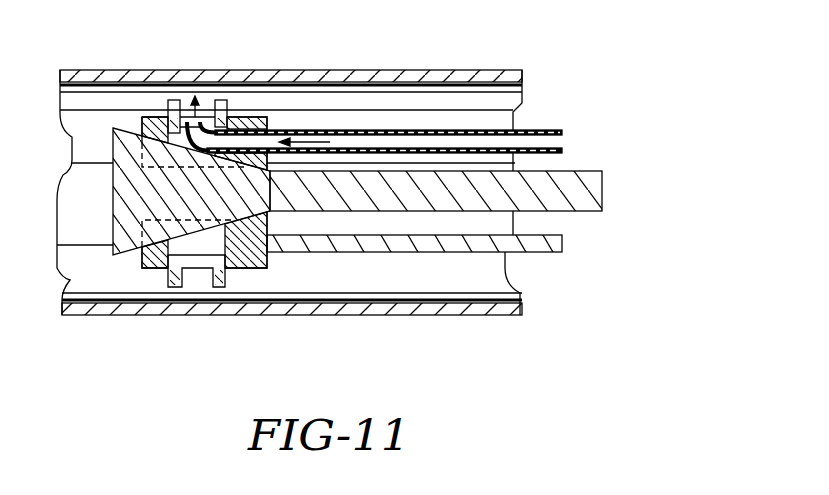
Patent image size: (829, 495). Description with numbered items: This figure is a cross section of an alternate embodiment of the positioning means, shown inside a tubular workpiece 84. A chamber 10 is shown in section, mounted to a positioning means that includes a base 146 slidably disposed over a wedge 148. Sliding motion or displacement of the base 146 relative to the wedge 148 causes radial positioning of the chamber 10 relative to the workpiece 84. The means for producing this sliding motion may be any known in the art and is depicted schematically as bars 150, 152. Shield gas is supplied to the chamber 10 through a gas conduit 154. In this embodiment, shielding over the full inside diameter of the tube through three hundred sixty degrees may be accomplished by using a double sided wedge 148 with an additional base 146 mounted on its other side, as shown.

The tubular workpiece 84 is at (135, 78).
The chamber 10 is at (220, 100).
The base 146 is at (263, 118).
The gas conduit 154 is at (528, 128).
The bar 152 is at (556, 198).
The bar 150 is at (528, 250).
The wedge 148 is at (135, 213).